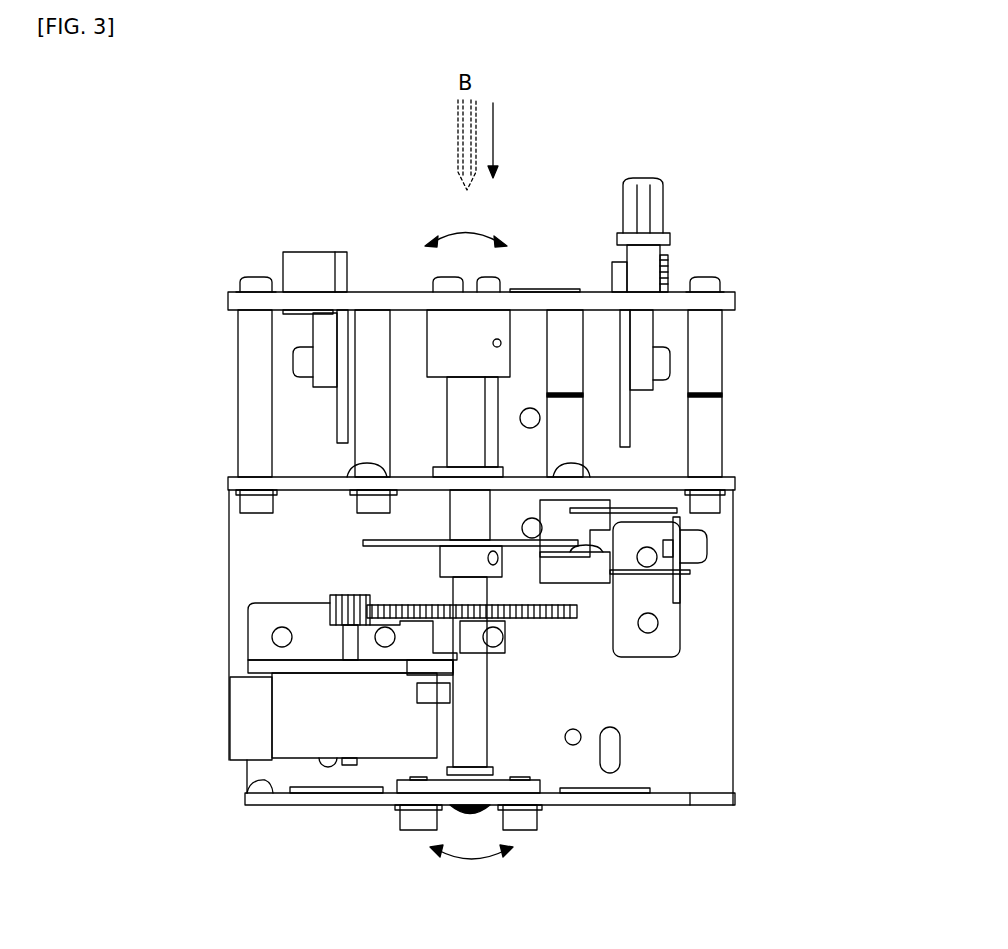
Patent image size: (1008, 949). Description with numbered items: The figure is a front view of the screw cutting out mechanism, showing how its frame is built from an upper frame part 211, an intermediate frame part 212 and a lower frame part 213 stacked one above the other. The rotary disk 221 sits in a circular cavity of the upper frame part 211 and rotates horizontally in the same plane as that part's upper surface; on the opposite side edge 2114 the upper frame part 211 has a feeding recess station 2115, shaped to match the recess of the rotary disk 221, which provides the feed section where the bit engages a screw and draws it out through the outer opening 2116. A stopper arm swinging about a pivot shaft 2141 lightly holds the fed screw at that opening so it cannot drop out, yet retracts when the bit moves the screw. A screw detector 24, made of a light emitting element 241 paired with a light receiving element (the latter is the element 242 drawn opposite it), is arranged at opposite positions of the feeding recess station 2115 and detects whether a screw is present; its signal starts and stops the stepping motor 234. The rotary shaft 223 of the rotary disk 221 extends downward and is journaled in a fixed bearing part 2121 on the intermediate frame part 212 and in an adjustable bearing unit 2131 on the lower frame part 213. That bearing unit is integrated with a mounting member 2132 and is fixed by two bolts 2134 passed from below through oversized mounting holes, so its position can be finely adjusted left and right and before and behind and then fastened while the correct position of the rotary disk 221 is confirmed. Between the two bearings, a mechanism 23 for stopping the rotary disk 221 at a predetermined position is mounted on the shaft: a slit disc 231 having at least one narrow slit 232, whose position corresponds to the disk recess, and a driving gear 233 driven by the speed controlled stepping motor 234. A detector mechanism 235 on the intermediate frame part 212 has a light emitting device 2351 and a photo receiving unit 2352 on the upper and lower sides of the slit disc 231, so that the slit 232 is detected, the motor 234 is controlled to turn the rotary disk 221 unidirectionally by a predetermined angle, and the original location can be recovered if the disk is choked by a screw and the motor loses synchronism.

The upper frame part 211 is at (416, 595).
The opposite side edge 2114 is at (247, 302).
The intermediate frame part 212 is at (228, 478).
The lower frame part 213 is at (270, 793).
The feeding recess station 2115 is at (511, 297).
The outer opening 2116 is at (452, 295).
The fixed bearing part 2121 is at (433, 467).
The adjustable bearing unit 2131 is at (493, 765).
The mounting member 2132 is at (480, 782).
The bolts 2134 is at (410, 823).
The pivot shaft 2141 is at (648, 210).
The rotary disk 221 is at (366, 264).
The rotary shaft 223 is at (473, 710).
The mechanism for stopping the rotary disk 23 is at (467, 600).
The slit disc 231 is at (363, 542).
The narrow slit 232 is at (490, 562).
The driving gear 233 is at (403, 600).
The stepping motor 234 is at (280, 705).
The detector mechanism 235 is at (708, 586).
The light emitting device 2351 is at (572, 512).
The photo receiving unit 2352 is at (557, 575).
The screw detector 24 is at (497, 221).
The light emitting element 241 is at (283, 252).
The second fixing member 242 is at (716, 290).